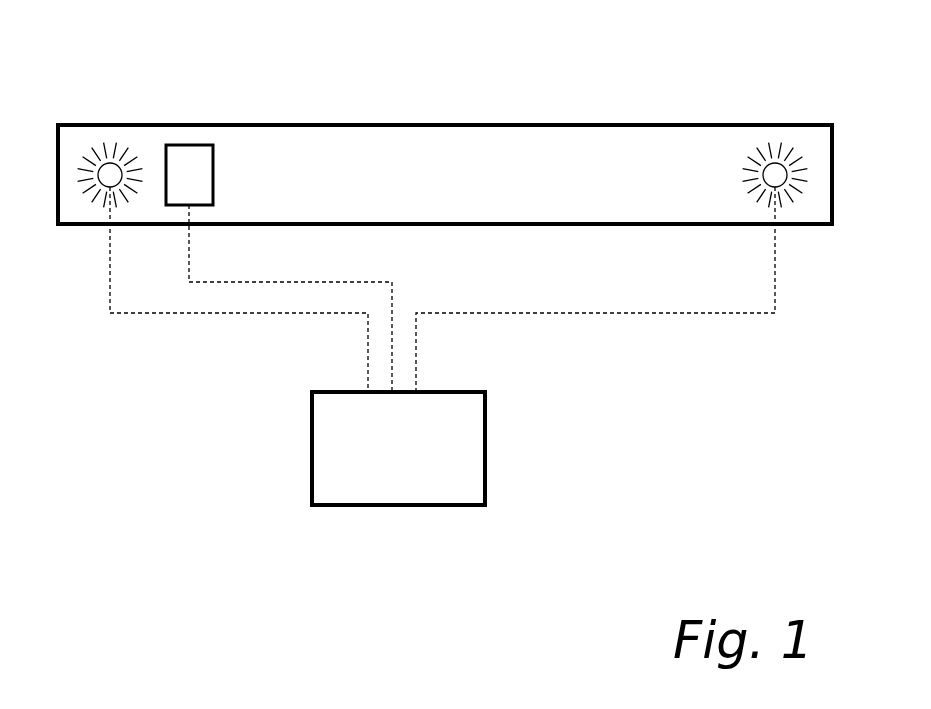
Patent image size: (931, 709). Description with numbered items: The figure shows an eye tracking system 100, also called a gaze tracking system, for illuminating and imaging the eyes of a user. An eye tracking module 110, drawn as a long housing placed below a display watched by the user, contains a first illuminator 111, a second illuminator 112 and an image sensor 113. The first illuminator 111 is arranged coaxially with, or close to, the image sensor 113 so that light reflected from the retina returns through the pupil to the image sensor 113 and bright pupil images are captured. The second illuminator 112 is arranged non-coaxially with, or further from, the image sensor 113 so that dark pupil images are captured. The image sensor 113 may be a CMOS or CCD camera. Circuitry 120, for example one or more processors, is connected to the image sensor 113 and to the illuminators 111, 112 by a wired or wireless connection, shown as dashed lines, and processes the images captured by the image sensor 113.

The eye tracking system 100 is at (120, 465).
The eye tracking module 110 is at (378, 124).
The first illuminator 111 is at (110, 173).
The second illuminator 112 is at (775, 172).
The image sensor 113 is at (180, 148).
The circuitry 120 is at (379, 487).